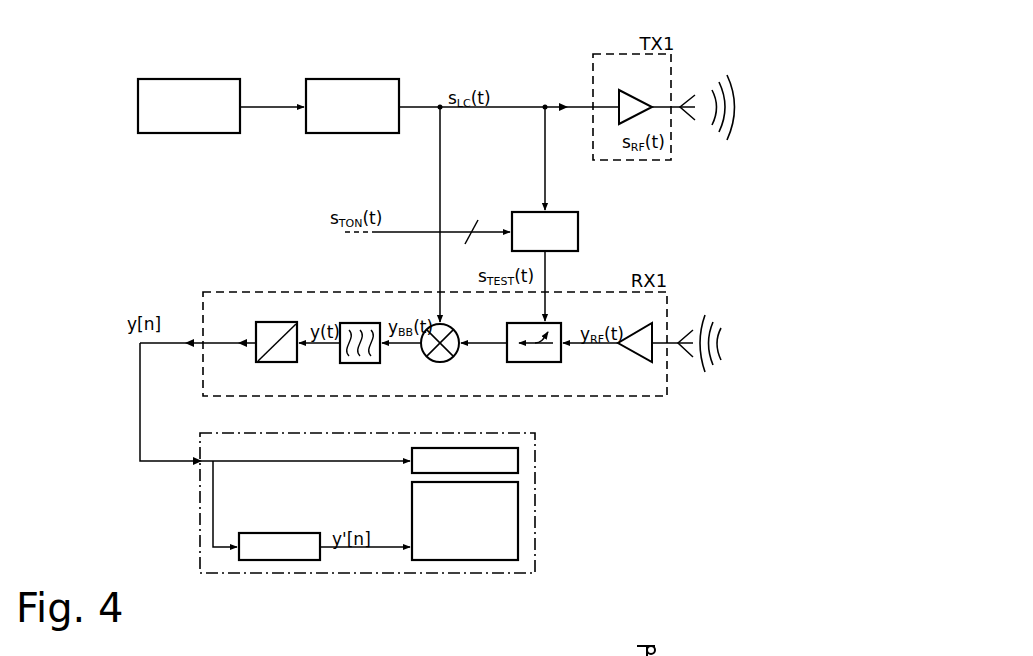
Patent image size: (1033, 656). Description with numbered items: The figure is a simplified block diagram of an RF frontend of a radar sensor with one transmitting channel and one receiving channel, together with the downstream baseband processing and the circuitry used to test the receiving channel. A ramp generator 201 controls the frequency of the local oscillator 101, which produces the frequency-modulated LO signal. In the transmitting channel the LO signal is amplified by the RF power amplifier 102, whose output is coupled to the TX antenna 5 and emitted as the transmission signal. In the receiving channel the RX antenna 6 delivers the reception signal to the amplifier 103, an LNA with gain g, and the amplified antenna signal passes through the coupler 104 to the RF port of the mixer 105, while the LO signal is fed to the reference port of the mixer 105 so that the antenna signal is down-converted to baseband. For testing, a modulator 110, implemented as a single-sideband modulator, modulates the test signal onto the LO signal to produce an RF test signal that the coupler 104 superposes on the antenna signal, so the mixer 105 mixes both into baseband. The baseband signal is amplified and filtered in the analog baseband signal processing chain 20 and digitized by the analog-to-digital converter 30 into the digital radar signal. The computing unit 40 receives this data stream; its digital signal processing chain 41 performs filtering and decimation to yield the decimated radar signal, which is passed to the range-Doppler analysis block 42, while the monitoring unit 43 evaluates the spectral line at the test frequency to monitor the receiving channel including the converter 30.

The ramp generator 201 is at (191, 79).
The local oscillator 101 is at (364, 79).
The RF power amplifier 102 is at (650, 92).
The TX antenna 5 is at (687, 92).
The modulator 110 is at (579, 233).
The RX antenna 6 is at (684, 330).
The amplifier 103 is at (638, 357).
The coupler 104 is at (540, 362).
The mixer 105 is at (436, 362).
The analog baseband signal processing chain 20 is at (338, 362).
The analog-to-digital converter 30 is at (255, 362).
The computing unit 40 is at (346, 573).
The digital signal processing chain 41 is at (275, 533).
The range-Doppler analysis unit 42 is at (411, 500).
The monitoring unit 43 is at (519, 459).